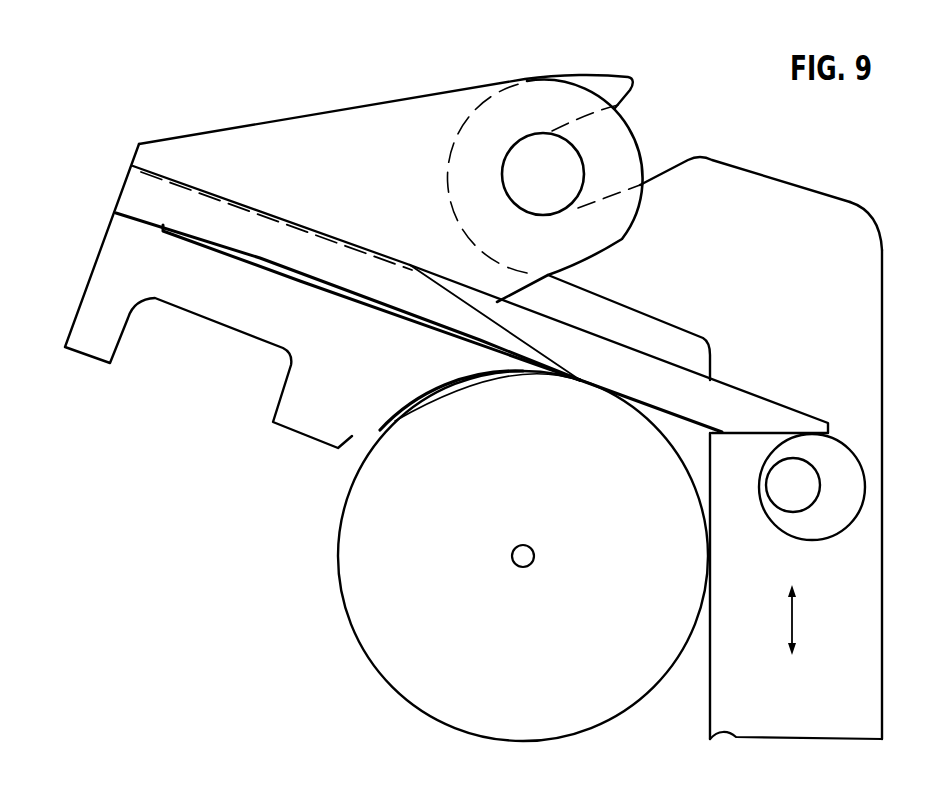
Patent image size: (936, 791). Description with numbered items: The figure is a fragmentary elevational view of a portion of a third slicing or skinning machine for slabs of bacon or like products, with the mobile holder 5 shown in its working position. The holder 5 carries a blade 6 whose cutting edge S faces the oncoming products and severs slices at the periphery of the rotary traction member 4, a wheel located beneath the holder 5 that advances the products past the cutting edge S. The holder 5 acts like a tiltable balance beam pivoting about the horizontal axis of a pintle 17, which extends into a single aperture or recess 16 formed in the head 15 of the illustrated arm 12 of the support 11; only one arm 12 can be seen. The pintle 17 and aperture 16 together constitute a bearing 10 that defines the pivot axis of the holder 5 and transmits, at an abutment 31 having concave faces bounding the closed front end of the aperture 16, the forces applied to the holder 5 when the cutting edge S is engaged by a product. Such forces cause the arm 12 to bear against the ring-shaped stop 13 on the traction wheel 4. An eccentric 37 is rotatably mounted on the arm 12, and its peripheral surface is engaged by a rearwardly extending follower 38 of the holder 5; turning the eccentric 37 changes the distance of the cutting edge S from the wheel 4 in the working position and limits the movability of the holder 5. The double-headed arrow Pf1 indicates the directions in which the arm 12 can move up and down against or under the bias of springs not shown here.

The rotary traction member 4 is at (351, 530).
The mobile holder 5 is at (188, 365).
The blade 6 is at (558, 373).
The bearing 10 is at (641, 113).
The support 11 is at (815, 446).
The arm 12 is at (871, 393).
The ring-shaped stop 13 is at (712, 549).
The head 15 is at (305, 126).
The aperture 16 is at (650, 175).
The pintle 17 is at (573, 158).
The abutment 31 is at (507, 190).
The eccentric 37 is at (861, 450).
The follower 38 is at (723, 388).
The cutting edge S is at (584, 380).
The double-headed arrow Pf1 is at (793, 615).